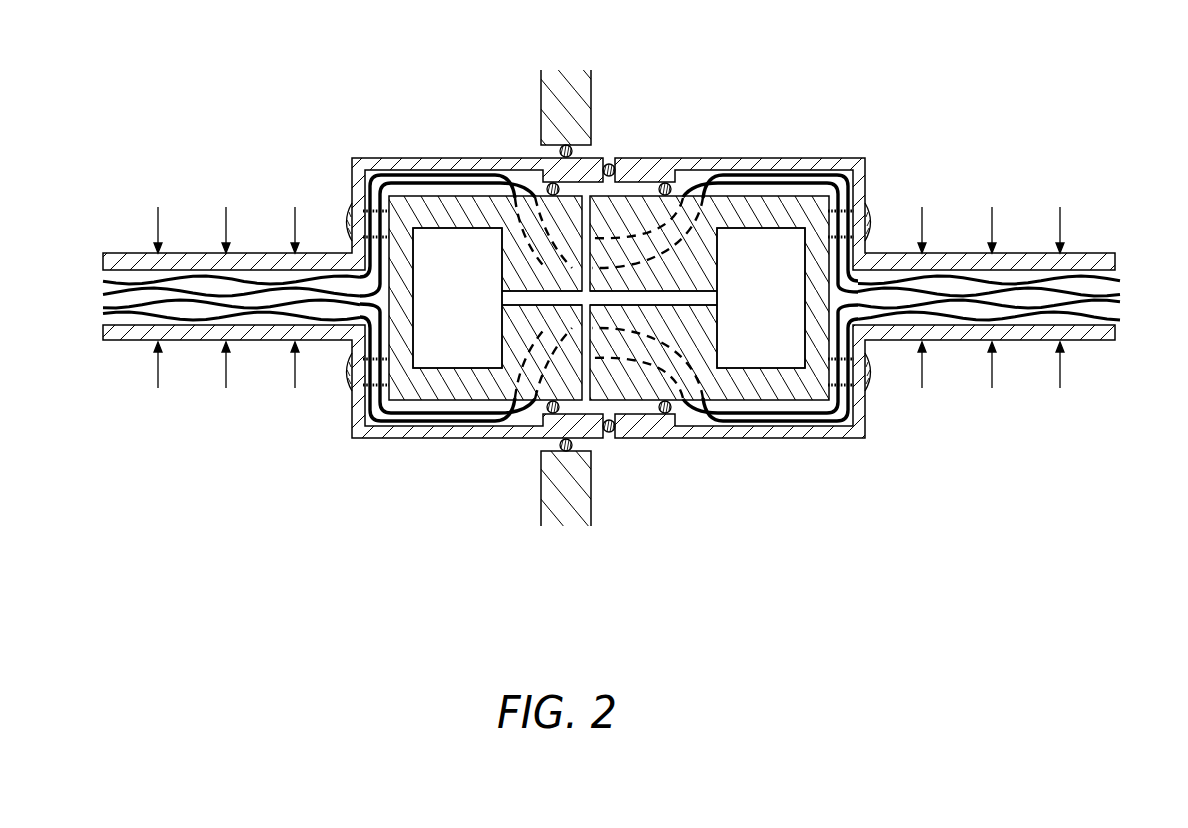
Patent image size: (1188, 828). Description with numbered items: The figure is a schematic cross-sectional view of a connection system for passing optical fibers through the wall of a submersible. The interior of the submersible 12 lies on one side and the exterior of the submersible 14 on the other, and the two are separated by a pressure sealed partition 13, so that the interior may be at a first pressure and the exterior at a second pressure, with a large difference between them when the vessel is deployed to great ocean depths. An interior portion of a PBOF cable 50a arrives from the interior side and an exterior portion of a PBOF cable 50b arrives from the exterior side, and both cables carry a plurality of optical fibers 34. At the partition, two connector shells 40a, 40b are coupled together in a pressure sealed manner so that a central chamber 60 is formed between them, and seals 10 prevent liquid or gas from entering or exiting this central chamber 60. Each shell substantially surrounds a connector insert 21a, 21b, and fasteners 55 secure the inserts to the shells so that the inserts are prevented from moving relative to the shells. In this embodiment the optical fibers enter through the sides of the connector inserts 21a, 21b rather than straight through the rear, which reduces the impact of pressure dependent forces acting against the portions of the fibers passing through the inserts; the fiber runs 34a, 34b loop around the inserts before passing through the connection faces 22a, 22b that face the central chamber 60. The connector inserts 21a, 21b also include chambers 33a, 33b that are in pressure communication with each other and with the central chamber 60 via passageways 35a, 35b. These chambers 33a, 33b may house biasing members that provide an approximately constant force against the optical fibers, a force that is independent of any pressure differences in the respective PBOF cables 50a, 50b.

The seals 10 is at (664, 183).
The interior of the submersible 12 is at (241, 176).
The partition 13 is at (580, 104).
The exterior of the submersible 14 is at (1003, 176).
The connector insert 21a is at (415, 390).
The connector insert 21b is at (728, 205).
The connection face 22a is at (540, 200).
The connection face 22b is at (663, 205).
The chamber 33a is at (471, 312).
The chamber 33b is at (776, 312).
The optical fibers 34 is at (1102, 317).
The first fiber bundle portion 34a is at (408, 177).
The second fiber bundle portion 34b is at (788, 173).
The passageway 35a is at (513, 296).
The passageway 35b is at (705, 296).
The connector shell 40a is at (430, 439).
The connector shell 40b is at (745, 440).
The interior portion of PBOF cable 50a is at (278, 297).
The exterior portion of PBOF cable 50b is at (940, 297).
The fasteners 55 is at (347, 212).
The central chamber 60 is at (620, 410).